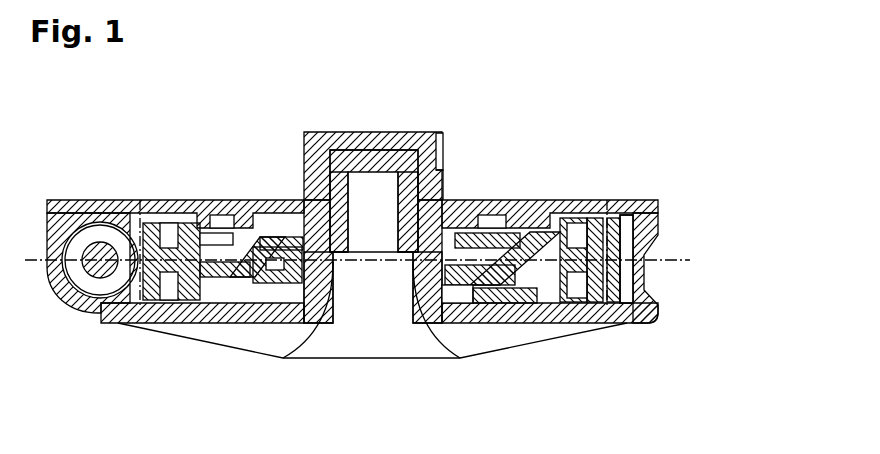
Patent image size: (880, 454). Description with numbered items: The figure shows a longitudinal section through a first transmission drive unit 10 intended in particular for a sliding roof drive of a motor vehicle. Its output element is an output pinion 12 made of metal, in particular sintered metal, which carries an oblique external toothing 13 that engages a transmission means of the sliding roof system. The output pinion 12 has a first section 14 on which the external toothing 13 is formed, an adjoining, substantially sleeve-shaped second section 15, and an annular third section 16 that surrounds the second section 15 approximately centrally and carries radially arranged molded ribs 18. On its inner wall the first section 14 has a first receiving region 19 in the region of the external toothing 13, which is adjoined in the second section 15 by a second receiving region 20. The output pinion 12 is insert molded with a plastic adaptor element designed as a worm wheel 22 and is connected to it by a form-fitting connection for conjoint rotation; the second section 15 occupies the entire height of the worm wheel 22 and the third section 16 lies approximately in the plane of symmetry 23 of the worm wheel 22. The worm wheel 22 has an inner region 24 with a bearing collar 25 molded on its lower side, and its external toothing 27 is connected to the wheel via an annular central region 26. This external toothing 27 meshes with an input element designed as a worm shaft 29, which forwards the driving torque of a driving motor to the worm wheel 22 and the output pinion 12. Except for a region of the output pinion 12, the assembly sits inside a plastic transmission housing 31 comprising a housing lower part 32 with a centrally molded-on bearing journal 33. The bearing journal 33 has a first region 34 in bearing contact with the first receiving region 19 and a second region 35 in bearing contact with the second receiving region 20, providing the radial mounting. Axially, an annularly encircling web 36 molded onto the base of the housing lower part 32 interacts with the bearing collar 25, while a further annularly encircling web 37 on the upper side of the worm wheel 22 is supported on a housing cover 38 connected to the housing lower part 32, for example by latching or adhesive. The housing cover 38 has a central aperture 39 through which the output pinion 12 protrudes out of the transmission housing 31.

The transmission drive unit 10 is at (607, 130).
The output pinion 12 is at (318, 130).
The external toothing 13 is at (443, 136).
The first section 14 is at (443, 170).
The second section 15 is at (493, 201).
The third section 16 is at (530, 201).
The molded ribs 18 is at (205, 216).
The first receiving region 19 is at (399, 148).
The second receiving region 20 is at (413, 275).
The worm wheel 22 is at (608, 201).
The plane of symmetry 23 is at (680, 252).
The inner region 24 is at (478, 255).
The bearing collar 25 is at (462, 288).
The annular central region 26 is at (540, 270).
The external toothing 27 is at (640, 268).
The worm shaft 29 is at (97, 272).
The transmission housing 31 is at (657, 318).
The housing lower part 32 is at (228, 314).
The bearing journal 33 is at (338, 262).
The first region 34 is at (326, 238).
The second region 35 is at (418, 270).
The annularly encircling web 36 is at (283, 300).
The annularly encircling web 37 is at (268, 214).
The housing cover 38 is at (163, 210).
The aperture 39 is at (300, 211).